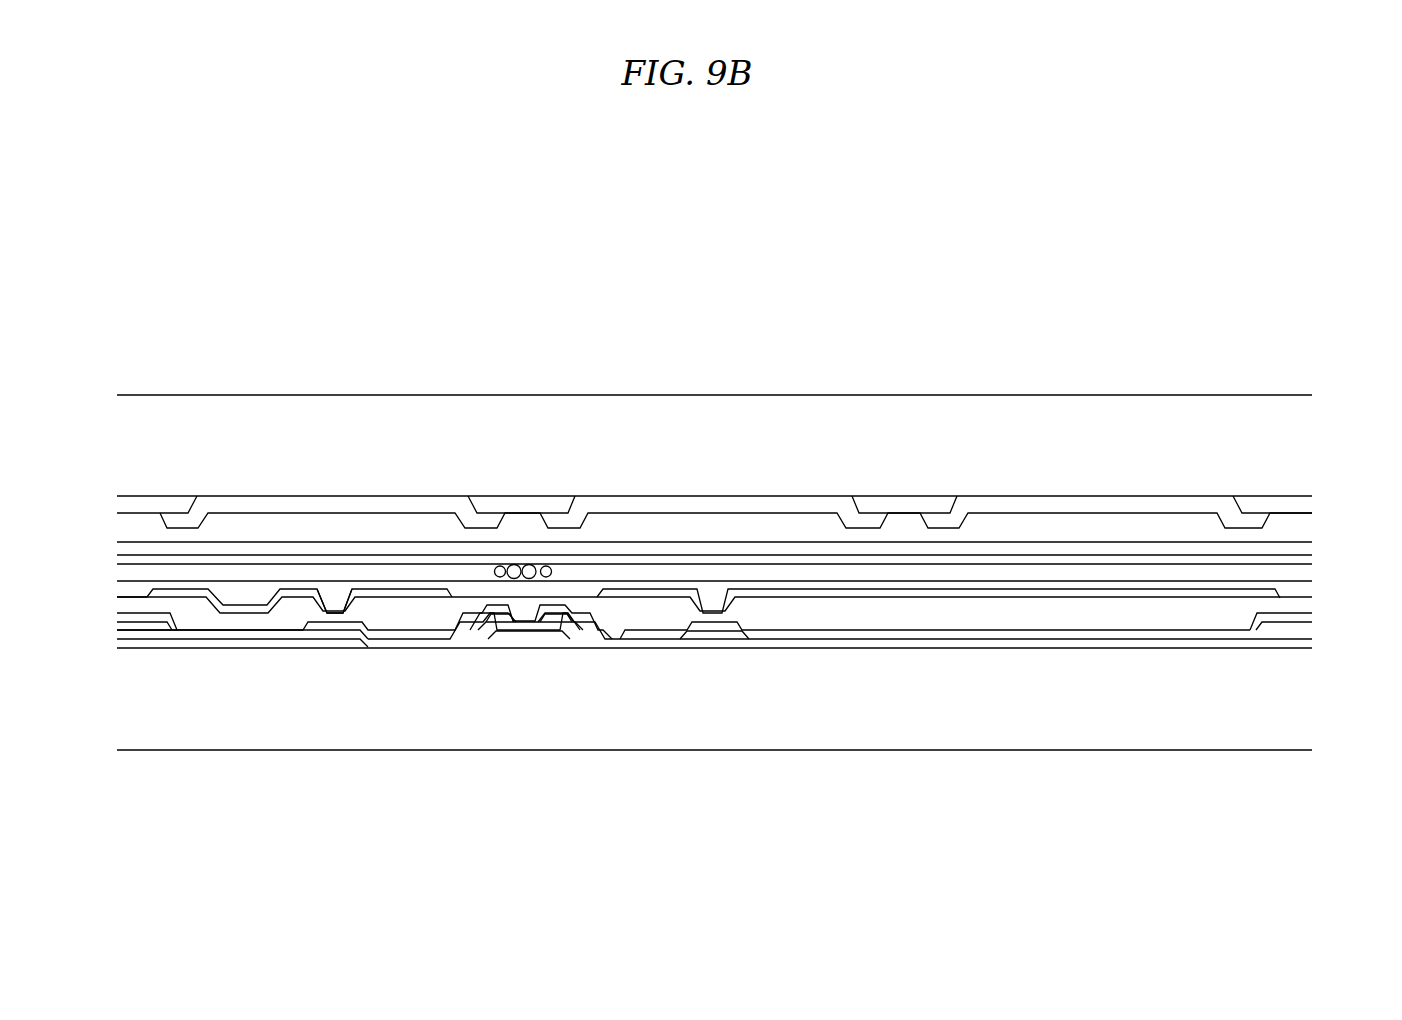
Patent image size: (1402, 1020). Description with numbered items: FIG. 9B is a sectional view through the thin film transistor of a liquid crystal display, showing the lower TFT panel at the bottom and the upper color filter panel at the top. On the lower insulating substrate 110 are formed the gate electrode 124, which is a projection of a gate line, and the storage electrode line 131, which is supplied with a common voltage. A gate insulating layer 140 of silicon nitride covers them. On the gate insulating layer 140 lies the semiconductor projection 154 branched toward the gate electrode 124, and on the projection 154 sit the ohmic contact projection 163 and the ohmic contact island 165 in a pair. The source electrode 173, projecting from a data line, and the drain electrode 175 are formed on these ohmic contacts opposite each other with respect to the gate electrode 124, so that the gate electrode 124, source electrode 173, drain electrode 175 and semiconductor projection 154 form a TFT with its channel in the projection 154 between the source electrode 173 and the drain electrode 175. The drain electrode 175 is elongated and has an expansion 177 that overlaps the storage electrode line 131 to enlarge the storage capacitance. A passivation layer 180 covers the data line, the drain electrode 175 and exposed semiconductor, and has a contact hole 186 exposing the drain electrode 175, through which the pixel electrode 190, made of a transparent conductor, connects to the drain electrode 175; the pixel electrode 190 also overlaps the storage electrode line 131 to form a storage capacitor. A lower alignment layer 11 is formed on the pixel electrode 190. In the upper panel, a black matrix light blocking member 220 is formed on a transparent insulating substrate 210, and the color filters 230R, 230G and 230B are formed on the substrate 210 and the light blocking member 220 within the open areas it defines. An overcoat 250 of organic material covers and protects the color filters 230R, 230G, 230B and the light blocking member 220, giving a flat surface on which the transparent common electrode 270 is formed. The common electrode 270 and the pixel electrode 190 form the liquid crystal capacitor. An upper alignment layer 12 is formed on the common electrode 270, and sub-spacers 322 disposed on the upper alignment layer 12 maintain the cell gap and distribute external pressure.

The insulating substrate 210 is at (127, 444).
The overcoat 250 is at (125, 527).
The common electrode 270 is at (122, 551).
The upper alignment layer 12 is at (145, 565).
The color filter 230B is at (277, 505).
The light blocking member 220 is at (512, 505).
The sub-spacers 322 is at (530, 565).
The color filter 230G is at (708, 505).
The color filter 230R is at (1072, 505).
The lower alignment layer 11 is at (1295, 589).
The passivation layer 180 is at (1295, 607).
The pixel electrode 190 is at (1180, 595).
The storage electrode line 131 is at (887, 645).
The gate insulating layer 140 is at (815, 637).
The insulating substrate 110 is at (383, 723).
The expansion 177 is at (330, 625).
The contact hole 186 is at (322, 603).
The gate electrode 124 is at (540, 645).
The projection 154 is at (527, 628).
The ohmic contact island 165 is at (470, 625).
The projection 163 is at (565, 618).
The drain electrode 175 is at (493, 622).
The source electrode 173 is at (560, 607).